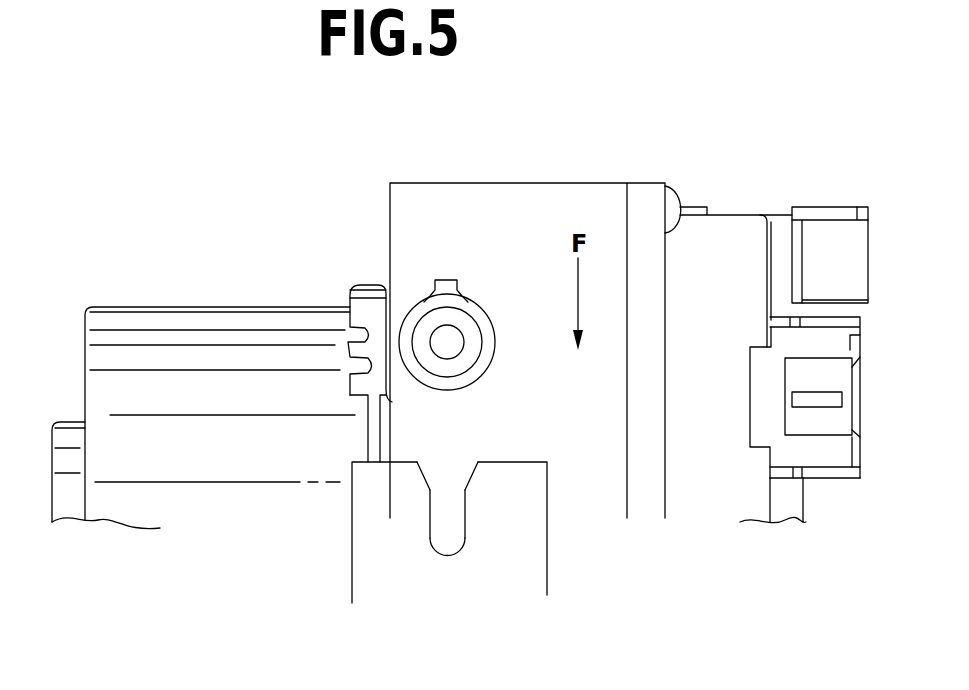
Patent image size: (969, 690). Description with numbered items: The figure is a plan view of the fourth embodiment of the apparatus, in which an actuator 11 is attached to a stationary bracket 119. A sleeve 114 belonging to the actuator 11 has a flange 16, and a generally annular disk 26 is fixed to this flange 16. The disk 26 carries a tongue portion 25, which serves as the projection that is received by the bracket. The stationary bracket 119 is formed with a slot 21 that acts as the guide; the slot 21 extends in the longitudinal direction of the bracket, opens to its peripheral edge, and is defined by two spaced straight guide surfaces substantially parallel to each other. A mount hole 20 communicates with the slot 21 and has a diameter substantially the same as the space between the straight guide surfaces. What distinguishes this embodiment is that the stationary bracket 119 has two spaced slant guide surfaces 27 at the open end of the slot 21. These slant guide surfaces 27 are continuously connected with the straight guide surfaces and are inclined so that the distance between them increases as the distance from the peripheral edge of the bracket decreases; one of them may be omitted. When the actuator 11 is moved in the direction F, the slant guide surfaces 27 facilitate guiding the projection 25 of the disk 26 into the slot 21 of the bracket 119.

The actuator 11 is at (533, 212).
The sleeve 114 is at (420, 318).
The tongue portion 25 is at (447, 280).
The annular disk 26 is at (483, 313).
The flange 16 is at (469, 352).
The slant guide surfaces 27 is at (420, 466).
The stationary bracket 119 is at (548, 545).
The slot 21 is at (438, 522).
The mount hole 20 is at (452, 546).